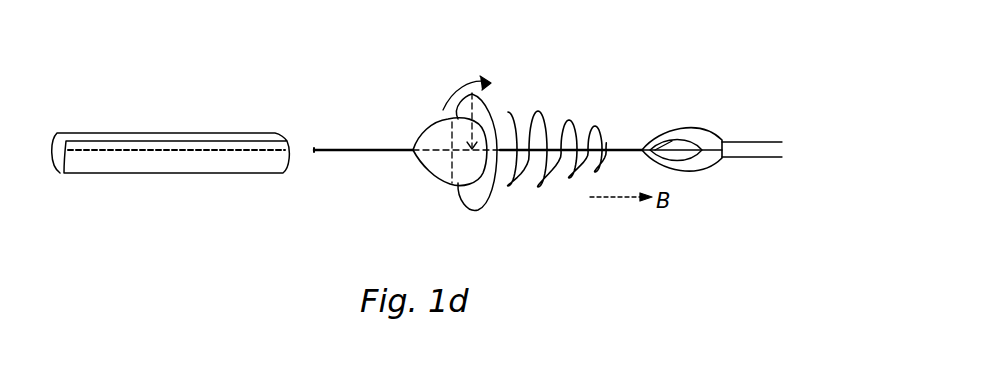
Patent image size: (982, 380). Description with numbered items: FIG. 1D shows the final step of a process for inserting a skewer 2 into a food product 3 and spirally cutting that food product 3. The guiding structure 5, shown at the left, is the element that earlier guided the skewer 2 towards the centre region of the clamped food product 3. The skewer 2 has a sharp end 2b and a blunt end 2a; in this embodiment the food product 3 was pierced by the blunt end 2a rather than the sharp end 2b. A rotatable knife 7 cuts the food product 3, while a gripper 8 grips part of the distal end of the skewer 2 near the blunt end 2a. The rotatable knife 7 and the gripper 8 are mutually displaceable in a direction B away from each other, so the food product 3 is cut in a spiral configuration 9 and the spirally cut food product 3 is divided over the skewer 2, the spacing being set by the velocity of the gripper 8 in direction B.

The skewer 2 is at (369, 153).
The blunt end 2a is at (677, 140).
The sharp end 2b is at (328, 148).
The food product 3 is at (436, 120).
The guiding structure 5 is at (166, 133).
The rotatable knife 7 is at (490, 204).
The gripper 8 is at (705, 125).
The spiral configuration 9 is at (540, 110).